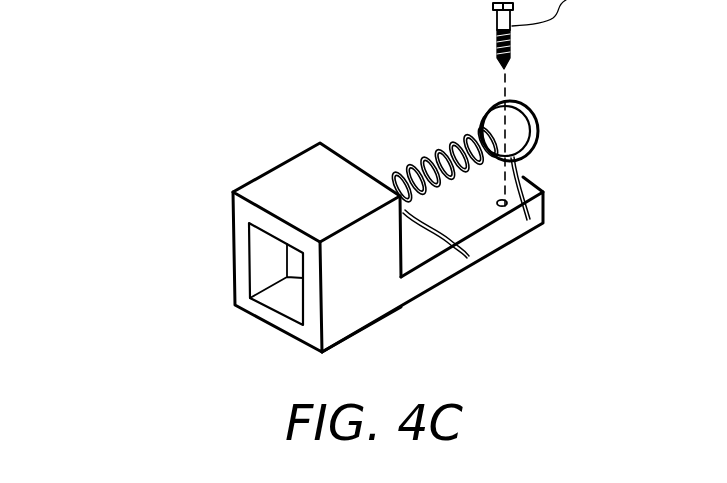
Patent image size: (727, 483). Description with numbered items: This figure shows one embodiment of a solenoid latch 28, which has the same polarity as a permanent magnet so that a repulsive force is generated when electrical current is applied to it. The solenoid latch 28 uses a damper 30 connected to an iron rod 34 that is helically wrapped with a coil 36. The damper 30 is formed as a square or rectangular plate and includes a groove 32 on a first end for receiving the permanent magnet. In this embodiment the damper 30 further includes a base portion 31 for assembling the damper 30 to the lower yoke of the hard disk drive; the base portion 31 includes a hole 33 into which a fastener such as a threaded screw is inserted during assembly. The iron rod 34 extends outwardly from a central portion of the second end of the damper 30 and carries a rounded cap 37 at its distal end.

The solenoid latch 28 is at (121, 123).
The damper 30 is at (282, 169).
The base portion 31 is at (437, 271).
The groove 32 is at (258, 272).
The hole 33 is at (506, 209).
The iron rod 34 is at (523, 123).
The coil 36 is at (430, 153).
The rounded cap 37 is at (538, 140).